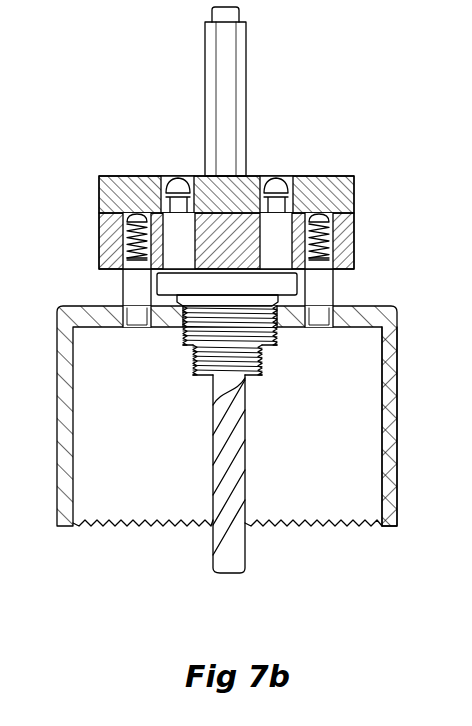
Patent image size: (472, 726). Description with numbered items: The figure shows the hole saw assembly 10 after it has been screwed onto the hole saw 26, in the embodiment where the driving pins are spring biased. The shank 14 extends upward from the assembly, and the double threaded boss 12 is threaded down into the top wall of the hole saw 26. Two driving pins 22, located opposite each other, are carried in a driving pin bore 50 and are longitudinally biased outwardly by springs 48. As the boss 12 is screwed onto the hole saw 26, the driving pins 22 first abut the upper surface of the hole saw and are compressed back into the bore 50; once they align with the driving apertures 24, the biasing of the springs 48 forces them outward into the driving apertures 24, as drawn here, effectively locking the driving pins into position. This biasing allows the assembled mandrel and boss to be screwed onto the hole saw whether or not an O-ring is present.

The hole saw assembly 10 is at (355, 242).
The double threaded boss 12 is at (186, 350).
The shank 14 is at (247, 91).
The driving pins 22 is at (135, 278).
The driving apertures 24 is at (318, 320).
The hole saw 26 is at (58, 347).
The springs 48 is at (99, 235).
The driving pin bore 50 is at (99, 200).